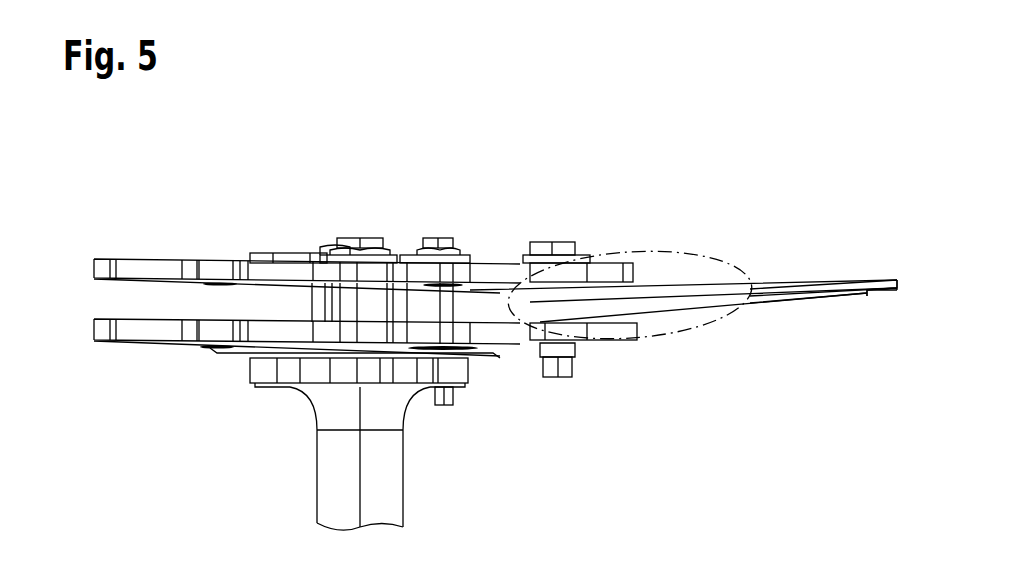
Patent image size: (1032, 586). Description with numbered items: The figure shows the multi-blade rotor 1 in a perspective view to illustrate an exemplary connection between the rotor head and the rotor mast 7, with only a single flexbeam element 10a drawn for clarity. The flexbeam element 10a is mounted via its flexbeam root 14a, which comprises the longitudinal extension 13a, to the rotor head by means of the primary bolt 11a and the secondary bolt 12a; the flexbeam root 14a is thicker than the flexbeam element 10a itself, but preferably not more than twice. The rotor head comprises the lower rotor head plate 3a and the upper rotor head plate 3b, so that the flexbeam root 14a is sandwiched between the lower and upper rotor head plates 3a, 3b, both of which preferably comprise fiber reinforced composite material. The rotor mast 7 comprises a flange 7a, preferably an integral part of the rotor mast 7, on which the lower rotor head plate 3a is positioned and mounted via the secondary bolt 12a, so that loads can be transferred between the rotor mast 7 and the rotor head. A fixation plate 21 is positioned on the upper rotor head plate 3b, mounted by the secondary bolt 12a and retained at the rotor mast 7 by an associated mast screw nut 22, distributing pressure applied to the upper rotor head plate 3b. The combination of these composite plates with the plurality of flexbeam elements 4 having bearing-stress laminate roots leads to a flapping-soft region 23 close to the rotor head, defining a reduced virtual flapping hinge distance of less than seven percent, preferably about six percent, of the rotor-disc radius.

The multi-blade rotor 1 is at (152, 150).
The lower rotor head plate 3a is at (130, 338).
The upper rotor head plate 3b is at (148, 270).
The flexbeam elements 4 is at (827, 263).
The rotor mast 7 is at (343, 496).
The flange 7a is at (258, 363).
The flexbeam element 10a is at (870, 295).
The primary bolt 11a is at (557, 350).
The secondary bolt 12a is at (450, 400).
The longitudinal extension 13a is at (485, 302).
The flexbeam root 14a is at (601, 275).
The fixation plate 21 is at (290, 258).
The mast screw nut 22 is at (398, 258).
The flapping-soft region 23 is at (708, 263).